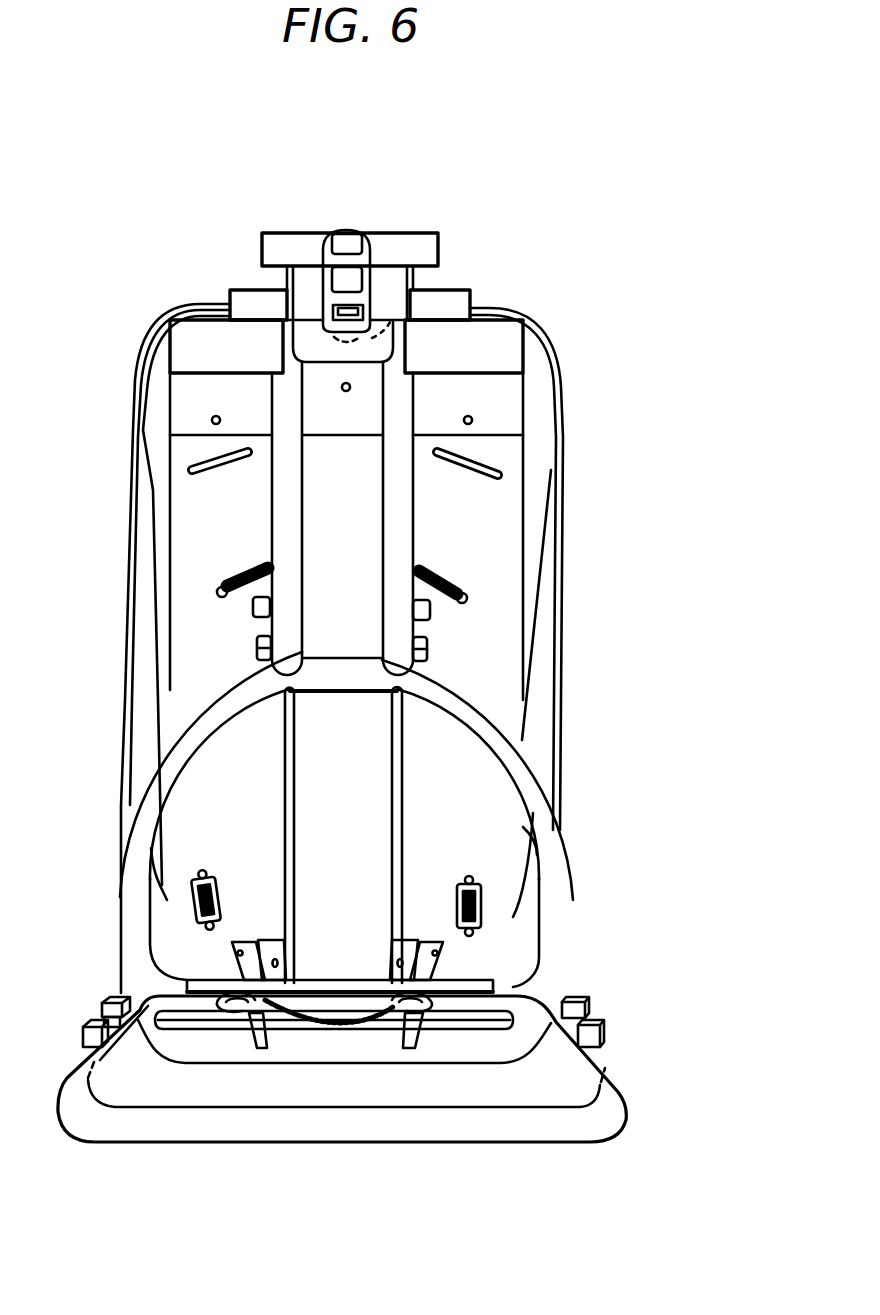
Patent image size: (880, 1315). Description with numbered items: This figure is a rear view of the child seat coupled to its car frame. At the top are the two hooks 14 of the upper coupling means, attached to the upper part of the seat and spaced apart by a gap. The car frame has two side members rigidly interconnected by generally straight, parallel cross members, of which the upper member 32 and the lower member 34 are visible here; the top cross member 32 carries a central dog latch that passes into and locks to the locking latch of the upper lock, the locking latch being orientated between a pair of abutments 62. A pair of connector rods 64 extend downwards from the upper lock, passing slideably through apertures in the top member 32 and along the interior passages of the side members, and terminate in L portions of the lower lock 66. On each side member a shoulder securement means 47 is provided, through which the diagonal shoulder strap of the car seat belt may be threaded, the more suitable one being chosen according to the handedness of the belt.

The hooks 14 is at (505, 347).
The upper member 32 is at (372, 340).
The lower member 34 is at (538, 970).
The shoulder securement means 47 is at (257, 651).
The abutments 62 is at (257, 302).
The connector rods 64 is at (401, 797).
The lower lock 66 is at (152, 957).